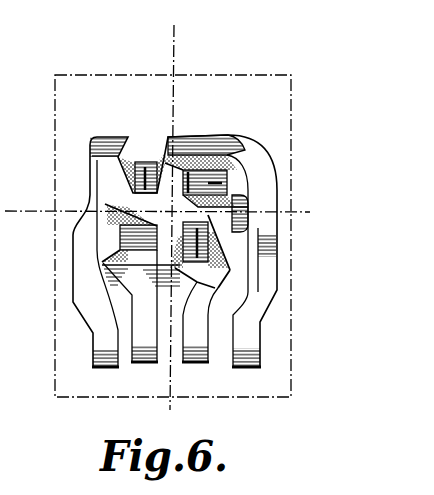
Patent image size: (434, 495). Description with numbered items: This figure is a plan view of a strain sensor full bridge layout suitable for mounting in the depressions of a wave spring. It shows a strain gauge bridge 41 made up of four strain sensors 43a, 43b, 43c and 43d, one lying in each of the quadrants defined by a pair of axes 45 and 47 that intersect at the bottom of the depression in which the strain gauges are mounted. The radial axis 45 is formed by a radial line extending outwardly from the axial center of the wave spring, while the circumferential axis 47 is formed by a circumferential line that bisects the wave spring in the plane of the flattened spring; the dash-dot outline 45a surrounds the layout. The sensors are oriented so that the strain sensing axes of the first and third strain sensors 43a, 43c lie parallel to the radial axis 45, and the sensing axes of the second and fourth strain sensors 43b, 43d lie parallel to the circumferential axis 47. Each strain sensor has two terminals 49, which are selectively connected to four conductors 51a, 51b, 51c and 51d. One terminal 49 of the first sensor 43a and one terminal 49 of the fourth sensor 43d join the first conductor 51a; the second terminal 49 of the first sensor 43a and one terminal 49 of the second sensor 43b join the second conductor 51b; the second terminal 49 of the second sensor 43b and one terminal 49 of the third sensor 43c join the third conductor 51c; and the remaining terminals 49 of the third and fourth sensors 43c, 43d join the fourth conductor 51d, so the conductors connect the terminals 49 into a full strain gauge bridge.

The strain gauge bridge 41 is at (241, 101).
The first strain sensor 43a is at (237, 168).
The second strain sensor 43b is at (222, 241).
The third strain sensor 43c is at (118, 237).
The fourth strain sensor 43d is at (147, 190).
The radial axis 45 is at (305, 211).
The outline of mating part 45a is at (145, 227).
The circumferential axis 47 is at (177, 45).
The terminals 49 is at (130, 138).
The first conductor 51a is at (260, 338).
The second conductor 51b is at (203, 364).
The third conductor 51c is at (148, 364).
The fourth conductor 51d is at (96, 370).